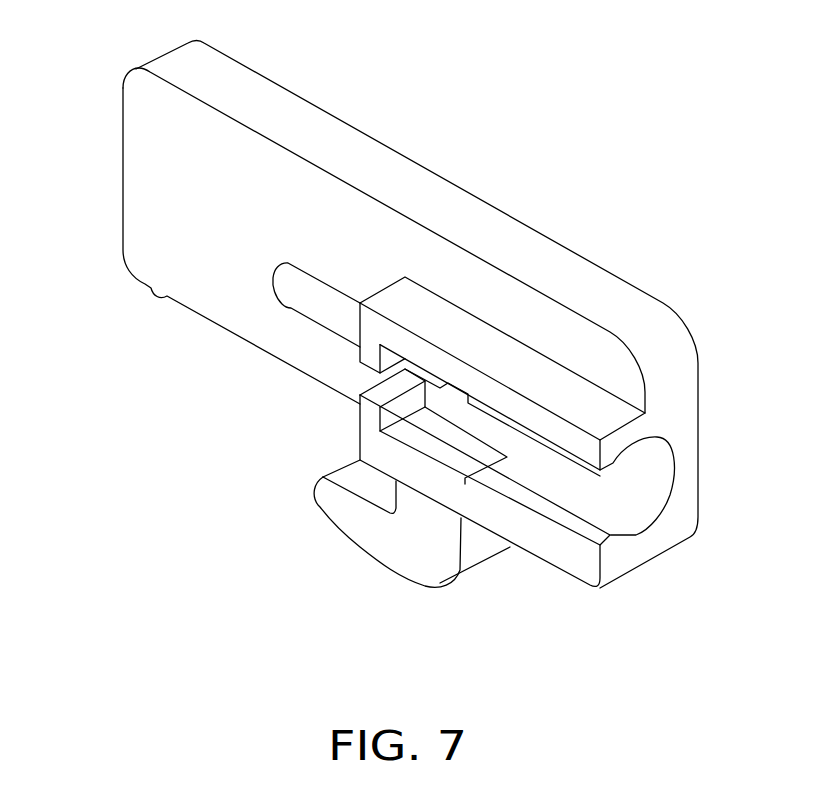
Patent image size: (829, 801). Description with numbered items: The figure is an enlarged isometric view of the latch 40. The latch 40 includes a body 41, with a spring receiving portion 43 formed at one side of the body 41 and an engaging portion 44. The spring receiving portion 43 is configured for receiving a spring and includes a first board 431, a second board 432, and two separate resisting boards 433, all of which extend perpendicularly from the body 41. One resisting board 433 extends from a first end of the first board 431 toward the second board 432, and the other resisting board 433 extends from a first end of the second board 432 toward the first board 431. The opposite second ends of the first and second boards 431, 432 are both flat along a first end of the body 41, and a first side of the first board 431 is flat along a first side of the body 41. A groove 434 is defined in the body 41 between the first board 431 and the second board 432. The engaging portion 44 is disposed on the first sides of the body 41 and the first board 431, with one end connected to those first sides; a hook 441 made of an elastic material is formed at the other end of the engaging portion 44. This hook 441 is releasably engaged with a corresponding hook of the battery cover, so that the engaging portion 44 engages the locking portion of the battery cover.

The latch 40 is at (409, 348).
The body 41 is at (155, 199).
The spring receiving portion 43 is at (484, 466).
The first board 431 is at (583, 565).
The second board 432 is at (553, 428).
The resisting boards 433 is at (372, 348).
The groove 434 is at (652, 482).
The engaging portion 44 is at (377, 551).
The hook 441 is at (360, 527).